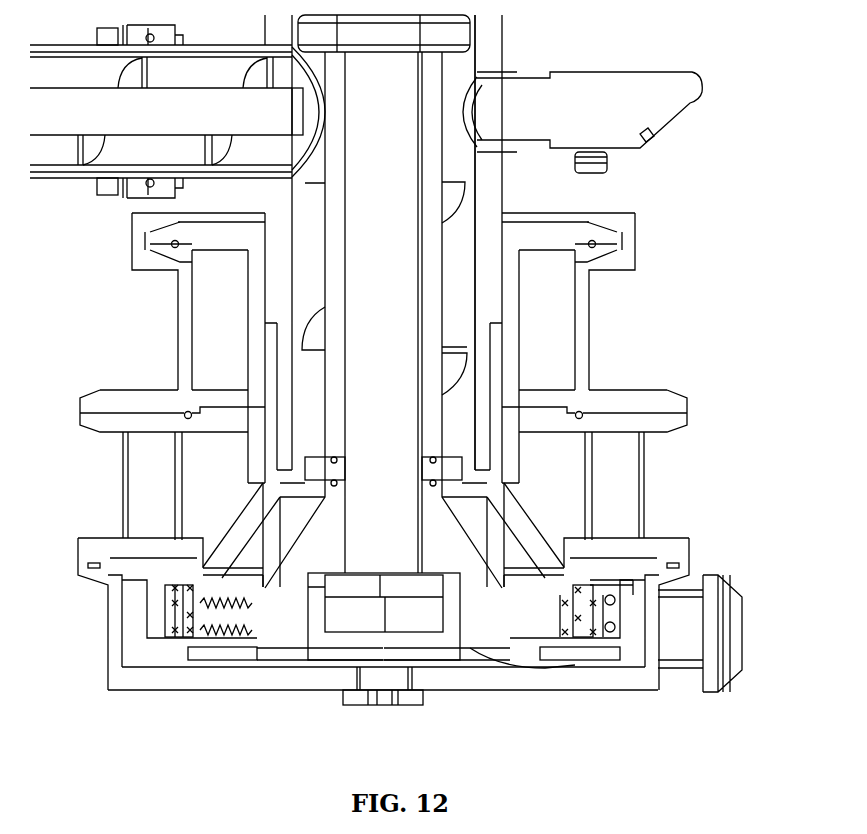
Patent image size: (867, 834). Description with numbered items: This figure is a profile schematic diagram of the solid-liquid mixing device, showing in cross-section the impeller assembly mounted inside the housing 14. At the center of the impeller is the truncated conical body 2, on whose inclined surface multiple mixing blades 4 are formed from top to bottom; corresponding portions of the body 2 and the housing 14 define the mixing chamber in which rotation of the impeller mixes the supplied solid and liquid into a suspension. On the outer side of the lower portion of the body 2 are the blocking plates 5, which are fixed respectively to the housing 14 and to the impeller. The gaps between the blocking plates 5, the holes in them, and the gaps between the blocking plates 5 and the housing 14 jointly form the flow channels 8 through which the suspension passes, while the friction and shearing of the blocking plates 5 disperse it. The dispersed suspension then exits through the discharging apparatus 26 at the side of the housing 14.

The truncated conical body 2 is at (323, 535).
The mixing blades 4 is at (498, 528).
The blocking plate 5 is at (580, 585).
The flow channels 8 is at (170, 592).
The housing 14 is at (533, 675).
The discharging apparatus 26 is at (692, 645).